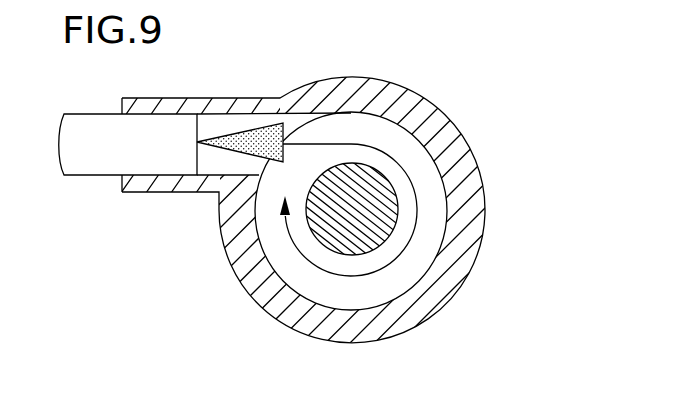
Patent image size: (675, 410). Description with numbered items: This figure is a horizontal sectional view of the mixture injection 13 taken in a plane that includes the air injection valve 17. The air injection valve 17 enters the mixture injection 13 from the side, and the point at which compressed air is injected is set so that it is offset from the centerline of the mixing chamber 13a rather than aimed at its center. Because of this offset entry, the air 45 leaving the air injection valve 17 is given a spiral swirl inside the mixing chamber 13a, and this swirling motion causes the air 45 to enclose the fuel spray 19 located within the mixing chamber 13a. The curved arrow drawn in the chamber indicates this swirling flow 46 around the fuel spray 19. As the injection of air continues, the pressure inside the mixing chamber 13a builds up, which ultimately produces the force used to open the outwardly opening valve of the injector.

The mixture injection 13 is at (413, 87).
The mixing chamber 13a is at (417, 255).
The air injection valve 17 is at (99, 165).
The fuel spray 19 is at (380, 195).
The air 45 is at (247, 145).
The swirl flow 46 is at (362, 282).